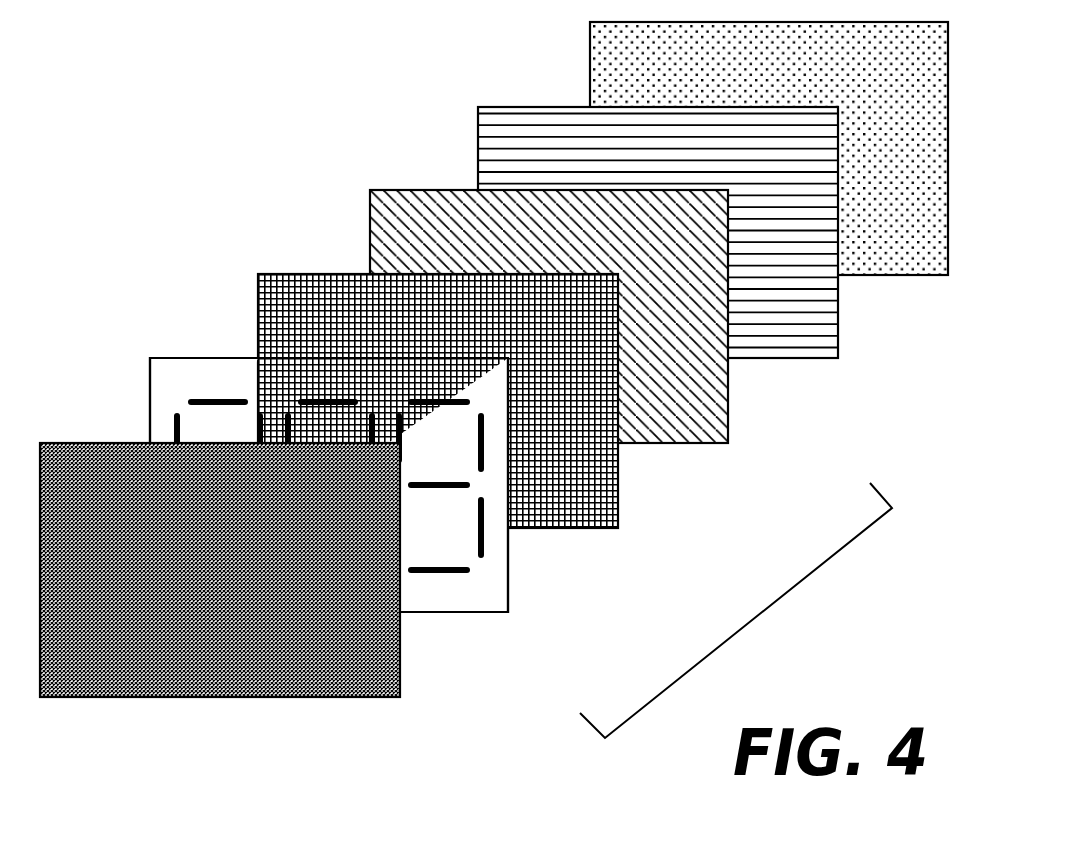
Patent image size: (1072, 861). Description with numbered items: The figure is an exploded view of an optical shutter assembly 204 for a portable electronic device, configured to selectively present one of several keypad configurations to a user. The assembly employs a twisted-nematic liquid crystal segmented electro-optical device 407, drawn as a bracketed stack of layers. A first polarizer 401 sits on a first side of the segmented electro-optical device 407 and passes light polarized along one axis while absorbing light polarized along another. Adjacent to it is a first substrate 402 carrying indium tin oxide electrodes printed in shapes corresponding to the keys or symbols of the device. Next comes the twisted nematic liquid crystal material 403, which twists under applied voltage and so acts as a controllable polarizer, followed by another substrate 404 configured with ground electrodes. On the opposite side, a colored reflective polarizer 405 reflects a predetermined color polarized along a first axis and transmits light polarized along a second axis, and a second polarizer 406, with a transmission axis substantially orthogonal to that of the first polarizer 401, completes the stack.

The optical shutter assembly 204 is at (555, 392).
The first polarizer 401 is at (357, 697).
The first substrate 402 is at (458, 612).
The twisted nematic liquid crystal material 403 is at (575, 528).
The substrate configured with ground electrodes 404 is at (687, 443).
The colored reflective polarizer 405 is at (797, 358).
The second polarizer 406 is at (905, 275).
The segmented electro-optical device 407 is at (812, 572).